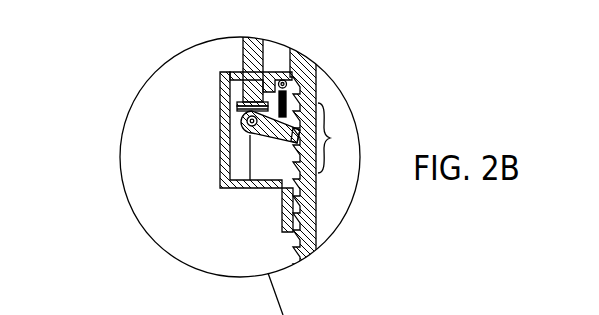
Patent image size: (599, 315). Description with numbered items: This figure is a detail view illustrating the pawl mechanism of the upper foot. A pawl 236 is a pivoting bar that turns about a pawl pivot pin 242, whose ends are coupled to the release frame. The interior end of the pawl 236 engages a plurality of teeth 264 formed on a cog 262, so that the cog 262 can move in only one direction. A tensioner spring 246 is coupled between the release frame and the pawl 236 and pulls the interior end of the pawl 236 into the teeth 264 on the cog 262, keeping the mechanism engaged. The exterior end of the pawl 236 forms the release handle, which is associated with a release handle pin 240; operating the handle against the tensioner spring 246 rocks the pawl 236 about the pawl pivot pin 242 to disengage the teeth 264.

The pawl 236 is at (286, 186).
The release handle pin 240 is at (246, 121).
The pawl pivot pin 242 is at (296, 132).
The tensioner spring 246 is at (317, 73).
The cog 262 is at (317, 215).
The teeth 264 is at (333, 139).